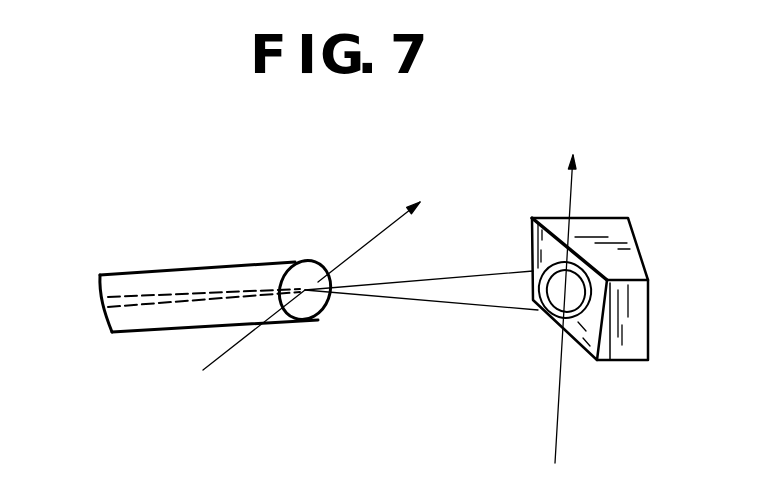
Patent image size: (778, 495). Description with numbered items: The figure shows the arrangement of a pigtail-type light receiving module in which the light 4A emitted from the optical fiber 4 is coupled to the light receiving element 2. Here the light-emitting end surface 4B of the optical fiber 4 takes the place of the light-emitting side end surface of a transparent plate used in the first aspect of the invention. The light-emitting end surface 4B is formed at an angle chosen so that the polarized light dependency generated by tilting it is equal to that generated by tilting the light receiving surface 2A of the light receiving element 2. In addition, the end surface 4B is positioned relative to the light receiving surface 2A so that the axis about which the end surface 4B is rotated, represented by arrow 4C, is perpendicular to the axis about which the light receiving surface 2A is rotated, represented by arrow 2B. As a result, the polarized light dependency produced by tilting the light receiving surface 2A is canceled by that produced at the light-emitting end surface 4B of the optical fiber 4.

The light receiving element 2 is at (555, 327).
The light receiving surface 2A is at (560, 318).
The arrow representing the axis about which the light receiving surface is rotated 2B is at (572, 190).
The optical fiber 4 is at (160, 273).
The light 4A is at (385, 298).
The light-emitting end surface 4B is at (303, 273).
The arrow representing the axis about which the light-emitting end surface is rotate 4C is at (238, 343).